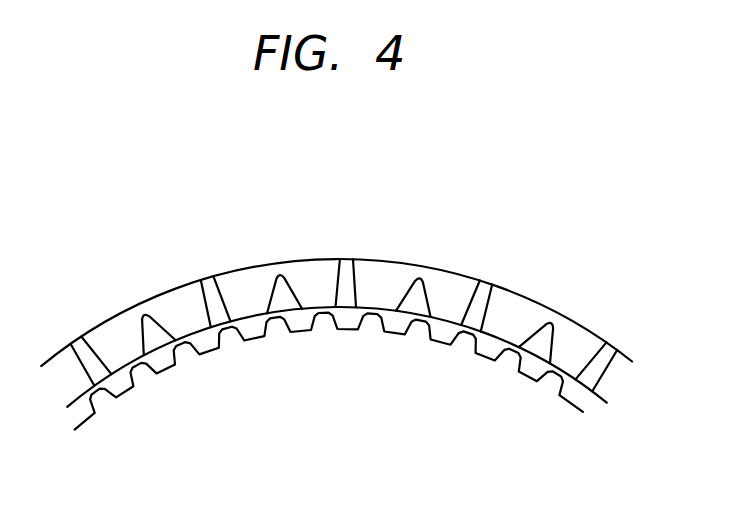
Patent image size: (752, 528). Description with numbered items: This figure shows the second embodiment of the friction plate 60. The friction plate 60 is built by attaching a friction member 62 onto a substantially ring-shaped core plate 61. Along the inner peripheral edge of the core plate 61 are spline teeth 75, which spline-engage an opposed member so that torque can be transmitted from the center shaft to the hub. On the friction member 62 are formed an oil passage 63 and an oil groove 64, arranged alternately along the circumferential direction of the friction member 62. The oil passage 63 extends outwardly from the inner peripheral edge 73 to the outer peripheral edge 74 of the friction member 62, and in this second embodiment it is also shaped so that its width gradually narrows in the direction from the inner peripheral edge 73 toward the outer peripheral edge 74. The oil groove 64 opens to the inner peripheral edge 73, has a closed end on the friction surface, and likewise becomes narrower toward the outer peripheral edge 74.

The friction plate 60 is at (492, 202).
The core plate 61 is at (498, 353).
The friction member 62 is at (508, 310).
The oil passage 63 is at (345, 290).
The oil groove 64 is at (283, 297).
The inner peripheral edge 73 is at (198, 335).
The outer peripheral edge 74 is at (153, 295).
The spline teeth 75 is at (443, 343).